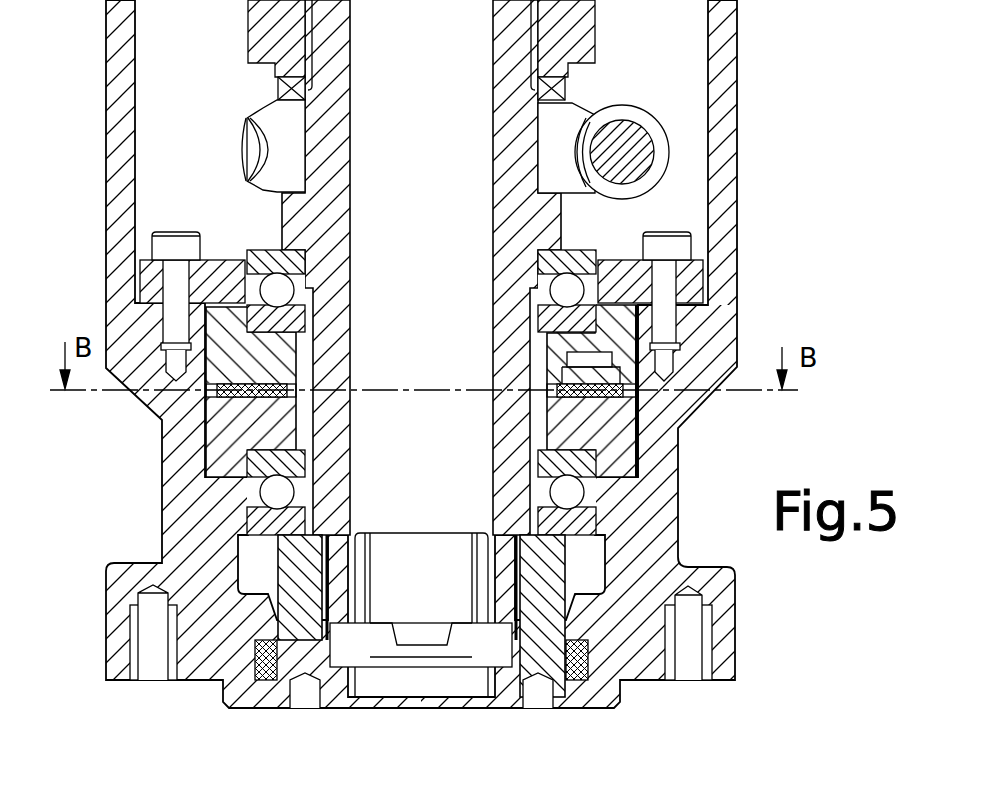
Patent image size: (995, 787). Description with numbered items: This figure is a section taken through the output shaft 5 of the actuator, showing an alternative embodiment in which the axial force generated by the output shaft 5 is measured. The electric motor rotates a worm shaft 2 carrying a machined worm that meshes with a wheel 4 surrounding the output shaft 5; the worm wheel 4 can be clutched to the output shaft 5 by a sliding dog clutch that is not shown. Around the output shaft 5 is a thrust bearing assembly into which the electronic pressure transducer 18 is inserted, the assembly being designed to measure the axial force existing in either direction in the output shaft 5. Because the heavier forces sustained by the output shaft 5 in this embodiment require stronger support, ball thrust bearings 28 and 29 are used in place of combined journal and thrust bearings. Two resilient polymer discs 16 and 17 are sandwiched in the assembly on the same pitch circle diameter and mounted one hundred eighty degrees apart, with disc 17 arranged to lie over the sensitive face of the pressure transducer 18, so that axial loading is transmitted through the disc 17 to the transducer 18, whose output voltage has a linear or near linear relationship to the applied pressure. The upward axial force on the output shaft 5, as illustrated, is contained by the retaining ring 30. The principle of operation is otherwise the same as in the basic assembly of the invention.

The worm shaft 2 is at (640, 137).
The wheel 4 is at (272, 117).
The output shaft 5 is at (300, 220).
The resilient polymer disc 16 is at (223, 407).
The resilient polymer disc 17 is at (612, 396).
The electronic pressure transducer 18 is at (600, 371).
The ball thrust bearing 28 is at (270, 494).
The ball thrust bearing 29 is at (281, 287).
The retaining ring 30 is at (678, 262).